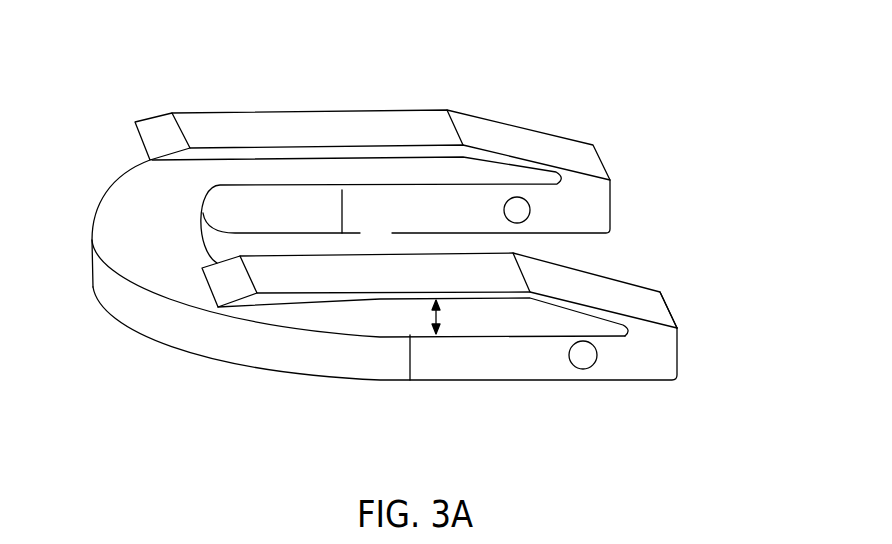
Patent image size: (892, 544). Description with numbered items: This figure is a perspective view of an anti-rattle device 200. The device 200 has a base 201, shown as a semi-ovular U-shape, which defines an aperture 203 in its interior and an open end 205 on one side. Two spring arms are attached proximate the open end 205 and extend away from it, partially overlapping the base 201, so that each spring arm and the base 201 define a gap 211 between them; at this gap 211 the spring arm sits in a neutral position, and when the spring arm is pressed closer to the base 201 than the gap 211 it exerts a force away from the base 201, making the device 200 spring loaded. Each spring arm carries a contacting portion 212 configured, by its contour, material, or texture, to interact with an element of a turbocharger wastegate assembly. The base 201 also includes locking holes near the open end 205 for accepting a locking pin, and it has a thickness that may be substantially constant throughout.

The anti-rattle device 200 is at (687, 80).
The base 201 is at (340, 367).
The aperture 203 is at (390, 248).
The open end 205 is at (637, 264).
The gap 211 is at (438, 318).
The contacting portion 212 is at (362, 140).